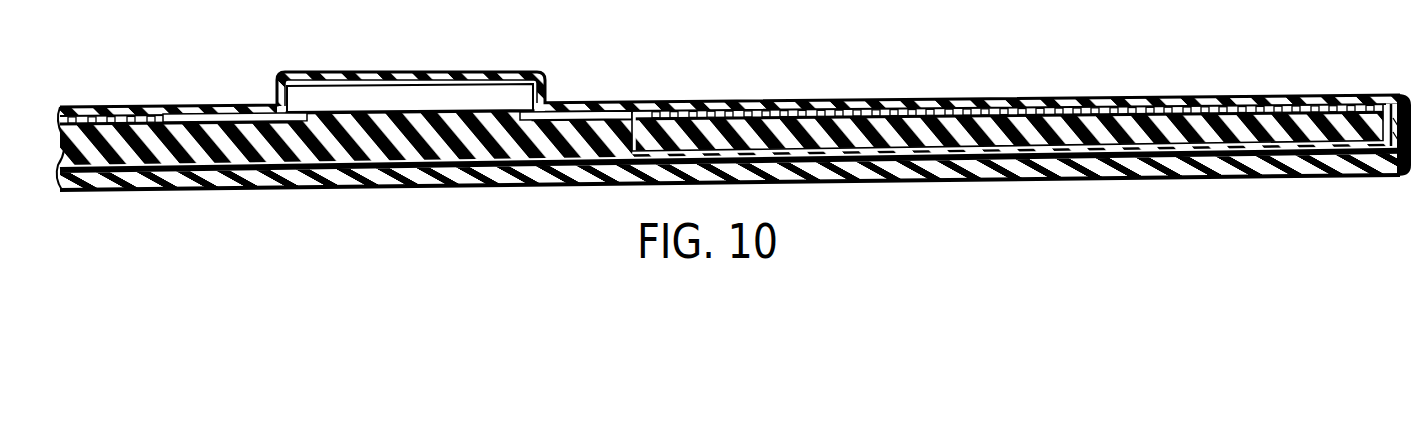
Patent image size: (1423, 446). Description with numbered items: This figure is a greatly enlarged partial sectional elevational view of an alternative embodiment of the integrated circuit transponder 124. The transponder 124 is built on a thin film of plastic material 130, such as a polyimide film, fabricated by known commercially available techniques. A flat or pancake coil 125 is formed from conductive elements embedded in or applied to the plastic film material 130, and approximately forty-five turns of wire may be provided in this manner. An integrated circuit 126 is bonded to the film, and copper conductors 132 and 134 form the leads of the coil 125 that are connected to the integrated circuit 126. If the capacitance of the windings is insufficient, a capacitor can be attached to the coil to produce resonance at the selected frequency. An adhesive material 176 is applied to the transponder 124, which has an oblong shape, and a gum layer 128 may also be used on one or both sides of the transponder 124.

The transponder 124 is at (687, 97).
The pancake coil 125 is at (781, 113).
The integrated circuit 126 is at (433, 95).
The gum layer 128 is at (852, 172).
The plastic film material 130 is at (858, 135).
The copper conductor 132 is at (222, 122).
The copper conductor 134 is at (598, 117).
The adhesive material 176 is at (1003, 100).